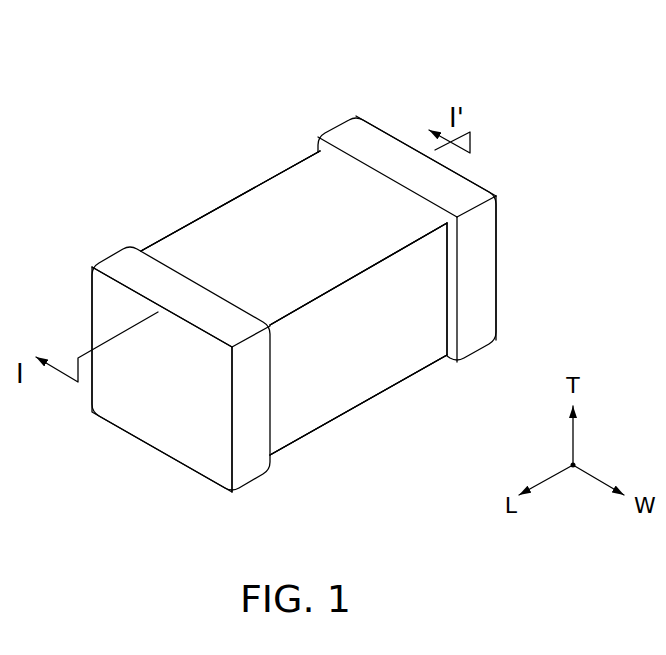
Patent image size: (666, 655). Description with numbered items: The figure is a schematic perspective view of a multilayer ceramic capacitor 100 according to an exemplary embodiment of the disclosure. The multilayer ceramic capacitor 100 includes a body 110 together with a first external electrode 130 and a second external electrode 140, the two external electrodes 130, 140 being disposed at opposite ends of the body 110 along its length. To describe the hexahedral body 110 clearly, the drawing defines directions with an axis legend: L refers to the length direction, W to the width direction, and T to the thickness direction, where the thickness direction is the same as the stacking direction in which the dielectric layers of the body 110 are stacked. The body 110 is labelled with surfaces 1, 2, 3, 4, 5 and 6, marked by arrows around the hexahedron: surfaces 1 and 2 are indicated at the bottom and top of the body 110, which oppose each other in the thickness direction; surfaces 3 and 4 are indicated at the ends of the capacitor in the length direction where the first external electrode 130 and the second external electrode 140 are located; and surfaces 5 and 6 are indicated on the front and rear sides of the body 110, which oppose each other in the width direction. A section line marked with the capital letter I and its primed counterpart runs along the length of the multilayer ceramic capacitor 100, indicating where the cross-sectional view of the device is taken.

The multilayer ceramic capacitor 100 is at (129, 70).
The body 110 is at (248, 207).
The first external electrode 130 is at (118, 257).
The second external electrode 140 is at (340, 133).
The first surface 1 is at (356, 410).
The second surface 2 is at (303, 213).
The third surface 3 is at (152, 410).
The fourth surface 4 is at (396, 131).
The fifth surface 5 is at (369, 355).
The sixth surface 6 is at (181, 227).